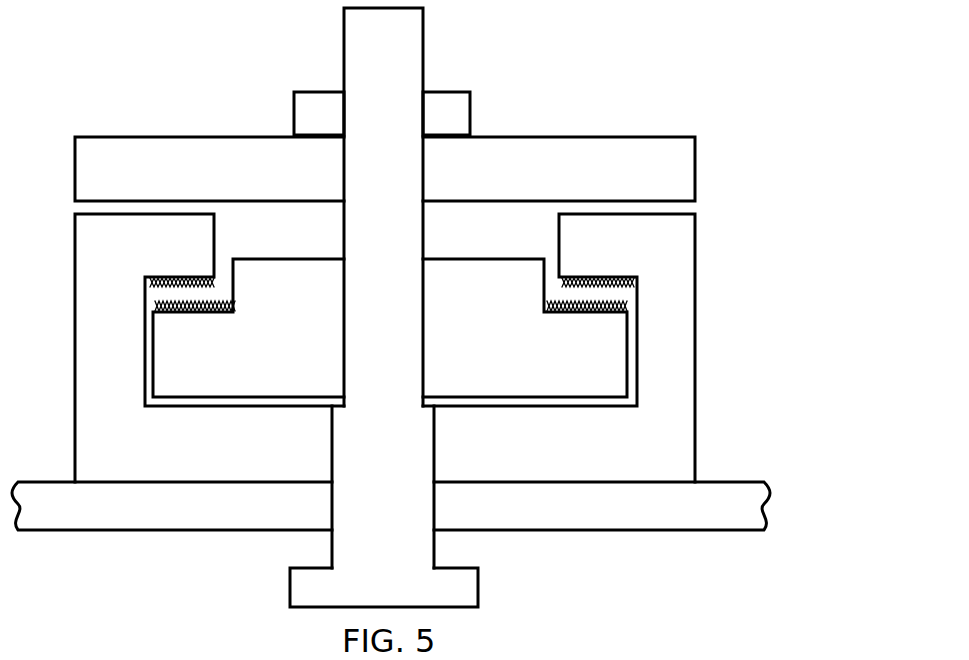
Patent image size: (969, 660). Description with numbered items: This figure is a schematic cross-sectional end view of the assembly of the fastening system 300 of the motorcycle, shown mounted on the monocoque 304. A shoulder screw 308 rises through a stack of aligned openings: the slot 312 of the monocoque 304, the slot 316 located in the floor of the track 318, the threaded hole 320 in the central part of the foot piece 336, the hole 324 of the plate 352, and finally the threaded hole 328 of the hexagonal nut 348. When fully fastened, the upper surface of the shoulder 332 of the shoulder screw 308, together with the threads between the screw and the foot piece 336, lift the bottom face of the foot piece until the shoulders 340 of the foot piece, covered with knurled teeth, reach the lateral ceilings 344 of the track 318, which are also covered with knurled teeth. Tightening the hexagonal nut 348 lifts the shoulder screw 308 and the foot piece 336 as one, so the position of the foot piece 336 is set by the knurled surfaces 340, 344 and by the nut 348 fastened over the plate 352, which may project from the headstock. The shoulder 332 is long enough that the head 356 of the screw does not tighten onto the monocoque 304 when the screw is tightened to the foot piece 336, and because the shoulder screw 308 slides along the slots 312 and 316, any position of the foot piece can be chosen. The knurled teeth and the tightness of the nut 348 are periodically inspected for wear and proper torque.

The fastening system 300 is at (100, 50).
The monocoque 304 is at (628, 530).
The shoulder screw 308 is at (425, 38).
The slot 312 is at (427, 523).
The slot 316 is at (340, 457).
The track 318 is at (697, 323).
The threaded hole 320 is at (350, 273).
The hole 324 is at (417, 187).
The threaded hole 328 is at (350, 105).
The shoulder 332 is at (437, 440).
The foot piece 336 is at (630, 378).
The shoulders 340 is at (627, 305).
The lateral ceilings 344 is at (563, 283).
The hexagonal nut 348 is at (470, 112).
The plate 352 is at (697, 170).
The head 356 is at (480, 585).